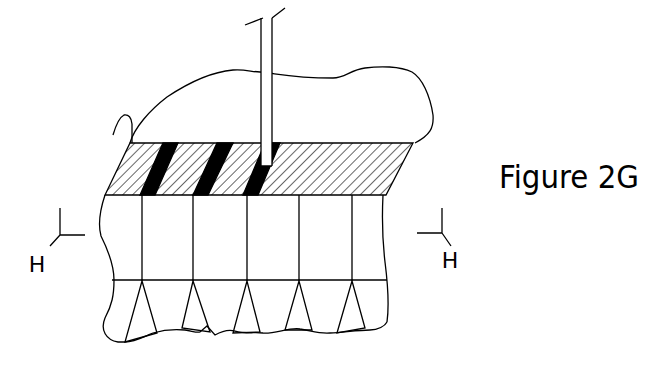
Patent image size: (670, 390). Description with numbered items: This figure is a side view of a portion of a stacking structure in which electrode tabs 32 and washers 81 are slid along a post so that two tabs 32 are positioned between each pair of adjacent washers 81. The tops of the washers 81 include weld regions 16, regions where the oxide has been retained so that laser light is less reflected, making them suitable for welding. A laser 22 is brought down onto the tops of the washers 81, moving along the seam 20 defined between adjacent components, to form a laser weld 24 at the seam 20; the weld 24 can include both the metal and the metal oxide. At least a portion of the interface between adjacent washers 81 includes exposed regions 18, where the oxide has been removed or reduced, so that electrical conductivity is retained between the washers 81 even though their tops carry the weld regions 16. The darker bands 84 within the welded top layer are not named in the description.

The weld region 16 is at (255, 140).
The exposed region 18 is at (163, 222).
The seam 20 is at (378, 143).
The laser 22 is at (272, 47).
The laser weld 24 is at (113, 135).
The tab 32 is at (134, 312).
The washer 81 is at (112, 245).
The conductive plug 84 is at (207, 167).